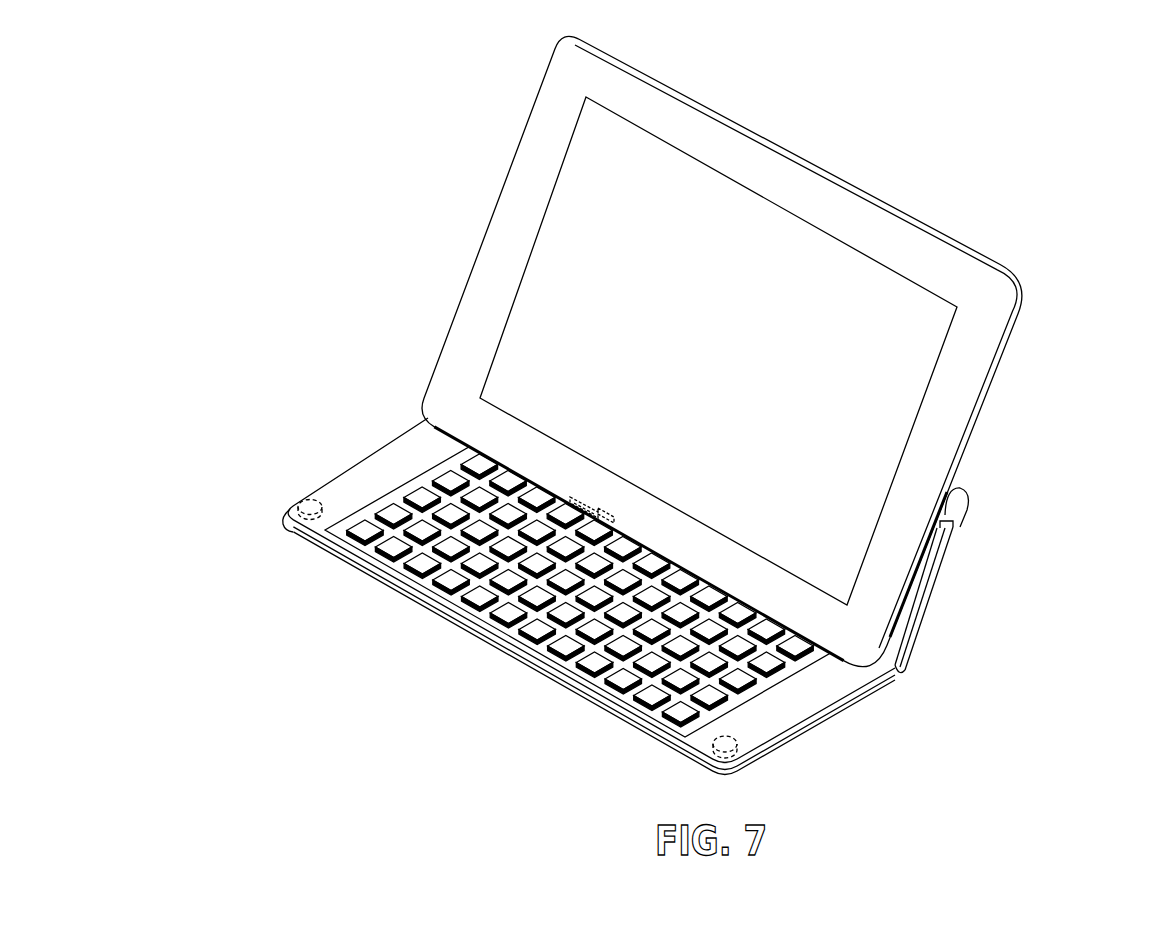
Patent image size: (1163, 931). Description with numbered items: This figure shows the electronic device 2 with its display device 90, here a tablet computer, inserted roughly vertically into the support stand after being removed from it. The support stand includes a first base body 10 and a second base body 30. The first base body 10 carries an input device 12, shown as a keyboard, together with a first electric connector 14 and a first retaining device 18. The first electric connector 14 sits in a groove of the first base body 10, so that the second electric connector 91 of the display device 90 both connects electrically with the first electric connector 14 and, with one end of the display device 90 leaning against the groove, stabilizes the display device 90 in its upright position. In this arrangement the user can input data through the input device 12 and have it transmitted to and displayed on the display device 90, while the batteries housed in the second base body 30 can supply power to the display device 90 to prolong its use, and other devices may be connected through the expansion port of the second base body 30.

The electronic device 2 is at (1088, 135).
The first base body 10 is at (793, 713).
The input device 12 is at (378, 497).
The first electric connector 14 is at (580, 495).
The first retaining device 18 is at (292, 500).
The second base body 30 is at (953, 513).
The display device 90 is at (793, 168).
The second electric connector 91 is at (615, 506).